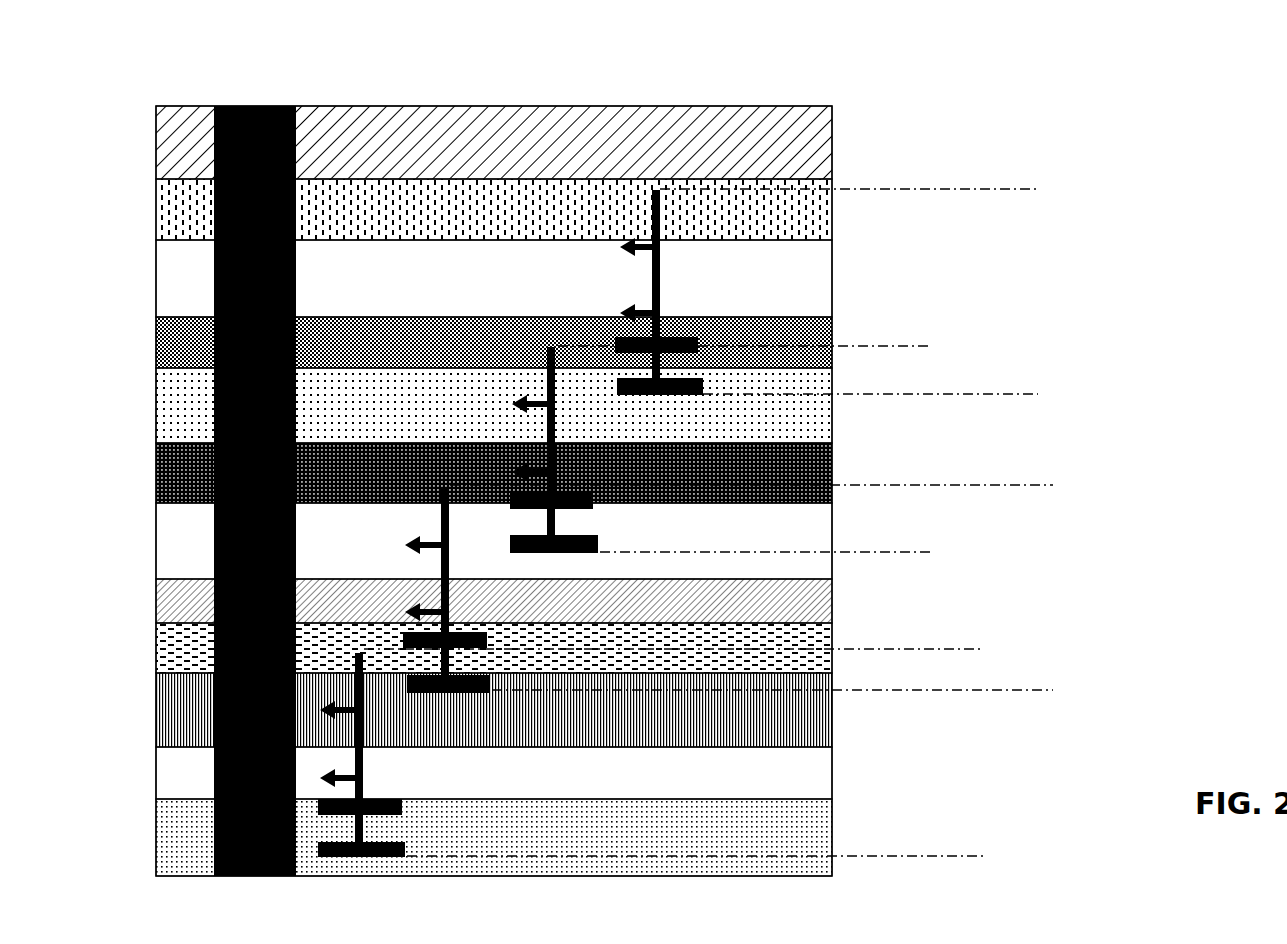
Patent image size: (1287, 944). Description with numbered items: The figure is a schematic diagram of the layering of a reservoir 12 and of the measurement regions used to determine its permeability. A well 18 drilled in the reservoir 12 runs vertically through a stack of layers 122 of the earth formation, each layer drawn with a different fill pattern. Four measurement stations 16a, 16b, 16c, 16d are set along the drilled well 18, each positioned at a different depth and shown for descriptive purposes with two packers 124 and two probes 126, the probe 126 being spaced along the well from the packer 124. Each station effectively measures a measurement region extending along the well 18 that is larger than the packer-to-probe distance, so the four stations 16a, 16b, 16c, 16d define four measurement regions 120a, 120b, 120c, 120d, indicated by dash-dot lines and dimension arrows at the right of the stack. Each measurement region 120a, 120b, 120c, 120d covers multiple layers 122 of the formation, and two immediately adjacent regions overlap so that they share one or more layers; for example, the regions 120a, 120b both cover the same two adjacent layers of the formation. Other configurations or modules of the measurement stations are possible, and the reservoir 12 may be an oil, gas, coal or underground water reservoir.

The reservoir 12 is at (486, 88).
The well 18 is at (270, 106).
The layers 122 is at (130, 403).
The packer 124 is at (697, 352).
The probe 126 is at (636, 313).
The measurement station 16a is at (400, 783).
The measurement station 16b is at (408, 565).
The measurement station 16c is at (500, 424).
The measurement station 16d is at (645, 292).
The measurement region 120a is at (964, 846).
The measurement region 120b is at (1021, 496).
The measurement region 120c is at (922, 542).
The measurement region 120d is at (1021, 200).